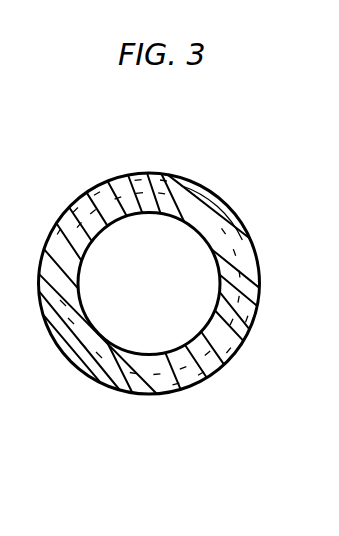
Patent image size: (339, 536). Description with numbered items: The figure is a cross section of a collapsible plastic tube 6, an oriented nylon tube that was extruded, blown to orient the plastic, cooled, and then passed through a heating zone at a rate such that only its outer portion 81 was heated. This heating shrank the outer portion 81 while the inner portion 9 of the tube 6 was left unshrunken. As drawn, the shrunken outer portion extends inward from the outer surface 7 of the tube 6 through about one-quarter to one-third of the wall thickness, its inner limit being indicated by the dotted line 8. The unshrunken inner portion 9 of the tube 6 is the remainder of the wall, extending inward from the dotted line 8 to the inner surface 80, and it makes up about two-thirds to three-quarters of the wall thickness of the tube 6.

The tube 6 is at (92, 177).
The outer surface 7 is at (241, 242).
The dotted line 8 is at (158, 183).
The inner portion 9 is at (210, 328).
The inner surface 80 is at (80, 297).
The outer portion 81 is at (240, 336).